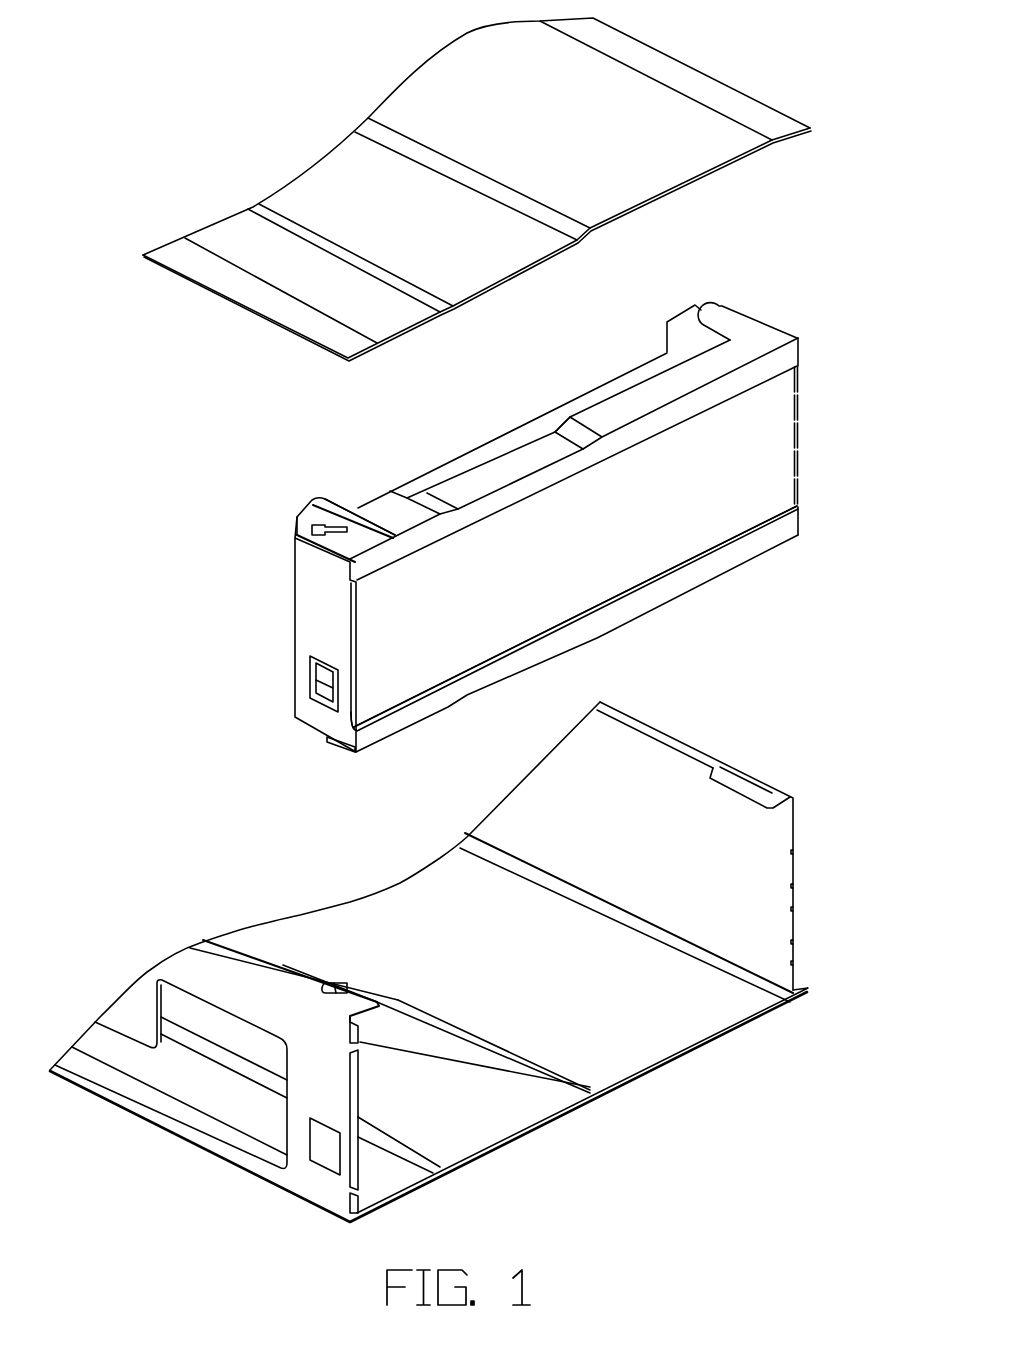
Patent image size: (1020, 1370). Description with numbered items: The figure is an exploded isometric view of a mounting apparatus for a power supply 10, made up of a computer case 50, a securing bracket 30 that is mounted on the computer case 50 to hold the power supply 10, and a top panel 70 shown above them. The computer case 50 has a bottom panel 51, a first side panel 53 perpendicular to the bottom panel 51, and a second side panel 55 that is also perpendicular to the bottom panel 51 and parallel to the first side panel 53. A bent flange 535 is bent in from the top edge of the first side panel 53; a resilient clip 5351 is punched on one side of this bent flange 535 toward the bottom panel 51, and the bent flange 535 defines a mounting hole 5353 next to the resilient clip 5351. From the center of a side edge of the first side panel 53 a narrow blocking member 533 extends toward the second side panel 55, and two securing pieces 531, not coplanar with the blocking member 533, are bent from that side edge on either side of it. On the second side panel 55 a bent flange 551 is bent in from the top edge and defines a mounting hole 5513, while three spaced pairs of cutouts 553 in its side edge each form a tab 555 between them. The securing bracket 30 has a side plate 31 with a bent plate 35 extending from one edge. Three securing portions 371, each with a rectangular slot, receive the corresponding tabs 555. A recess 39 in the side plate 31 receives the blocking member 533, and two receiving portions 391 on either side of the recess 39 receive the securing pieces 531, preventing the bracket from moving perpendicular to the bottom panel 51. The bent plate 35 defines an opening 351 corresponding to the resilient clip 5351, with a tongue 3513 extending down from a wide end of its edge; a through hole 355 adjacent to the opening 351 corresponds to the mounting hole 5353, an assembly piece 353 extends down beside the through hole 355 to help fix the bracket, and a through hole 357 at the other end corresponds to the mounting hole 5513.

The top panel 70 is at (256, 176).
The power supply 10 is at (690, 333).
The through hole 357 is at (735, 313).
The securing bracket 30 is at (518, 530).
The securing portion 371 is at (800, 377).
The opening 351 is at (340, 526).
The bent plate 35 is at (403, 515).
The through hole 355 is at (308, 514).
The assembly piece 353 is at (297, 522).
The tongue 3513 is at (305, 540).
The side plate 31 is at (743, 515).
The recess 39 is at (355, 707).
The receiving portion 391 is at (345, 755).
The computer case 50 is at (463, 972).
The bottom panel 51 is at (688, 1028).
The first side panel 53 is at (278, 1049).
The second side panel 55 is at (669, 837).
The bent flange 551 is at (645, 727).
The mounting hole 5513 is at (735, 776).
The cutouts 553 is at (795, 830).
The tab 555 is at (795, 893).
The bent flange 535 is at (295, 982).
The resilient clip 5351 is at (336, 990).
The mounting hole 5353 is at (308, 975).
The securing pieces 531 is at (358, 1043).
The blocking member 533 is at (358, 1167).